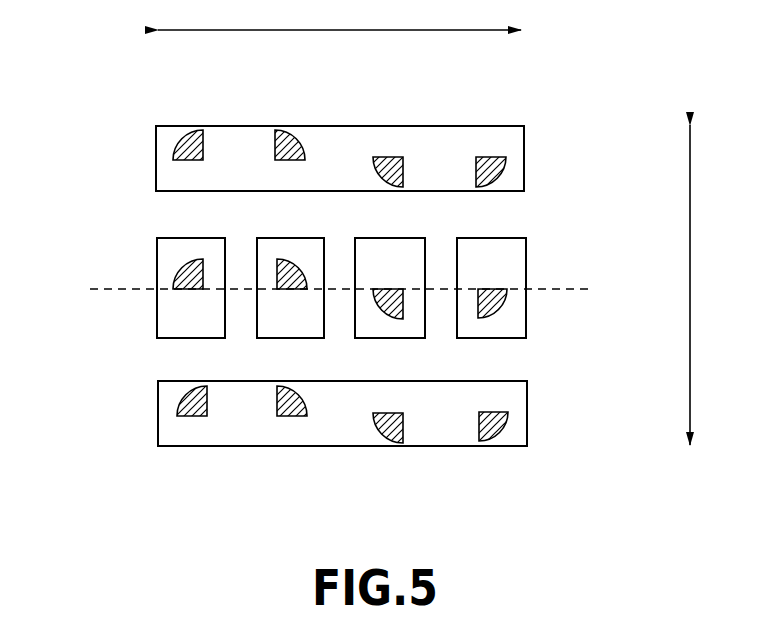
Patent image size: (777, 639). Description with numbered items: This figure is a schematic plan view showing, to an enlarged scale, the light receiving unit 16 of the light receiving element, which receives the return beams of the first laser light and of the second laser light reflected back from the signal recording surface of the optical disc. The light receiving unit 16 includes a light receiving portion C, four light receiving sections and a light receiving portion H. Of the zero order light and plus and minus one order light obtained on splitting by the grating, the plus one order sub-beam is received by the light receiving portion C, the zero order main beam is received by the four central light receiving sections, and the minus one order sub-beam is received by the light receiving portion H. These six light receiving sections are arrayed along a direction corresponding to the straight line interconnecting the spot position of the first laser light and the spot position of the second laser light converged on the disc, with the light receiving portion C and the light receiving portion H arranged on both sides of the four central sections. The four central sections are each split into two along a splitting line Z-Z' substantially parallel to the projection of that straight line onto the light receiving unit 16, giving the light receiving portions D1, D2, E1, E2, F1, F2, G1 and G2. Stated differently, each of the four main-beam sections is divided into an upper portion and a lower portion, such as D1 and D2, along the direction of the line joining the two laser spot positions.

The light receiving unit 16 is at (98, 96).
The light receiving portion C is at (340, 126).
The light receiving portion D1 is at (173, 238).
The light receiving portion D2 is at (173, 338).
The light receiving portion E1 is at (277, 238).
The light receiving portion E2 is at (277, 338).
The light receiving portion F1 is at (383, 238).
The light receiving portion F2 is at (383, 338).
The light receiving portion G1 is at (497, 238).
The light receiving portion G2 is at (497, 338).
The light receiving portion H is at (347, 447).